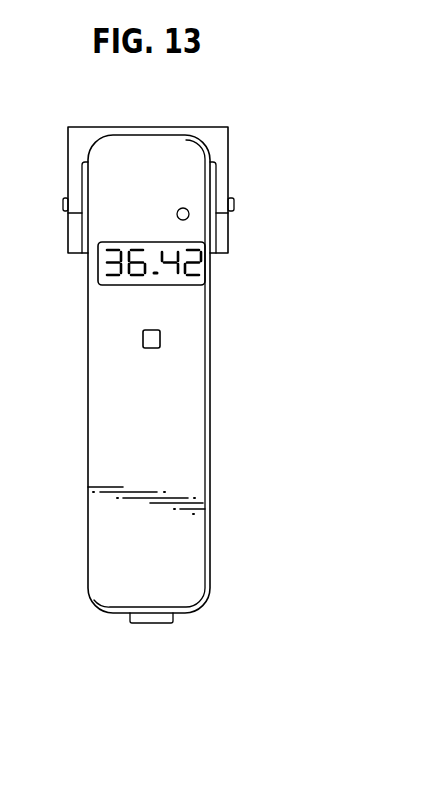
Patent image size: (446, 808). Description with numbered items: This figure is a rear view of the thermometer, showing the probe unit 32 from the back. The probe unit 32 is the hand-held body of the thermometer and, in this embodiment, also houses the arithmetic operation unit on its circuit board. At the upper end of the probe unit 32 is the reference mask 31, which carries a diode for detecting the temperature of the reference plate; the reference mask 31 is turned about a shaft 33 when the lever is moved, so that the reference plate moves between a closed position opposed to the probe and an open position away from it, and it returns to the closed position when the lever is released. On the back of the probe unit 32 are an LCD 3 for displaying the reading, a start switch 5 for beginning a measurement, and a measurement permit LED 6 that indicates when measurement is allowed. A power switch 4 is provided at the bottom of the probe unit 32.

The LCD 3 is at (122, 285).
The power switch 4 is at (157, 624).
The start switch 5 is at (143, 338).
The measurement permit LED 6 is at (184, 208).
The reference mask 31 is at (228, 148).
The probe unit 32 is at (212, 502).
The shaft 33 is at (234, 207).